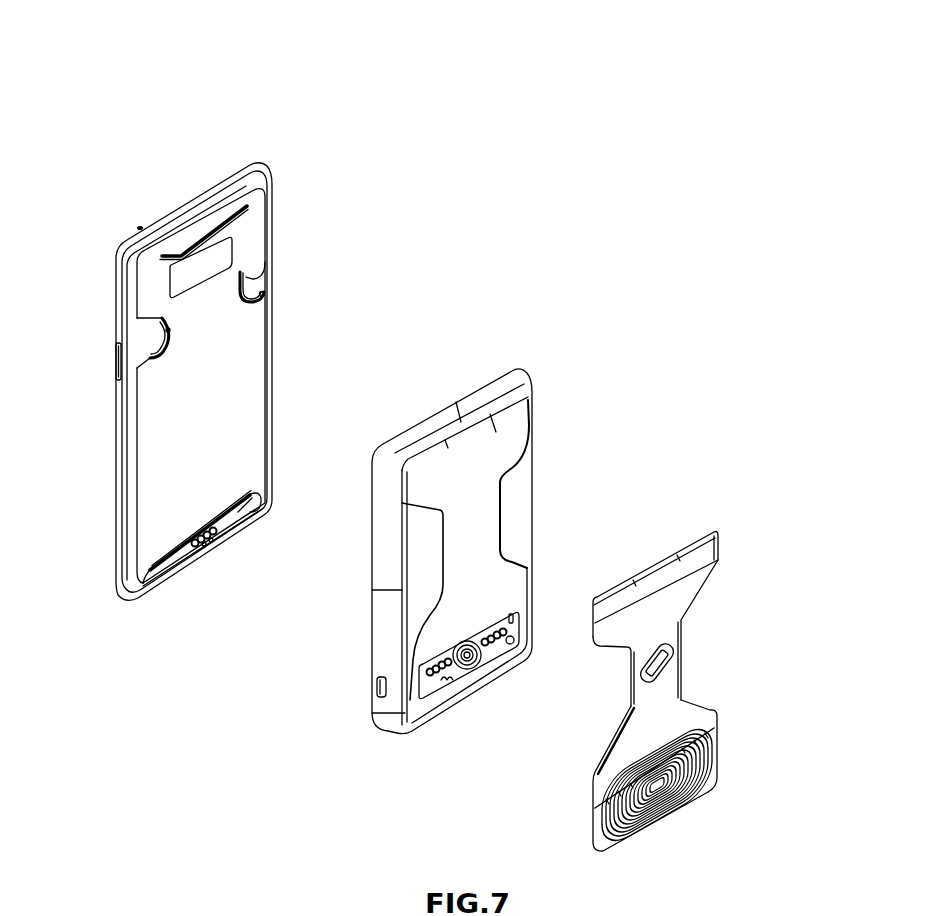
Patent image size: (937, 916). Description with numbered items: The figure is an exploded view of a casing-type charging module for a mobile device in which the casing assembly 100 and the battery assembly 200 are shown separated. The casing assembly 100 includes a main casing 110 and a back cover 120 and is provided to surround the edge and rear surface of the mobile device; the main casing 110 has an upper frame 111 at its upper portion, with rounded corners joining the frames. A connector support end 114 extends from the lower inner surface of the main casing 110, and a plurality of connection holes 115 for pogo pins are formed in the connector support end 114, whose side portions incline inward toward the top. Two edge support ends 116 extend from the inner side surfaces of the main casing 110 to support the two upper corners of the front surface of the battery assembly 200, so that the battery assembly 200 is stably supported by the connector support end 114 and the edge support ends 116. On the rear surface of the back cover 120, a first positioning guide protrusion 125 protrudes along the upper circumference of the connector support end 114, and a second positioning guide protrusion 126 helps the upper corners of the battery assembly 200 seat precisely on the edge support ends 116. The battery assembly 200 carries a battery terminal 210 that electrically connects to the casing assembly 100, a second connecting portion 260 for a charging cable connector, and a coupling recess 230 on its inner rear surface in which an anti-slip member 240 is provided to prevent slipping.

The casing assembly 100 is at (242, 98).
The main casing 110 is at (110, 195).
The upper frame 111 is at (188, 196).
The connector support end 114 is at (257, 512).
The connection holes 115 is at (198, 545).
The edge support ends 116 is at (252, 279).
The back cover 120 is at (295, 363).
The first positioning guide protrusion 125 is at (212, 513).
The second positioning guide protrusion 126 is at (265, 294).
The battery assembly 200 is at (532, 320).
The battery terminal 210 is at (437, 681).
The coupling recess 230 is at (487, 517).
The anti-slip member 240 is at (713, 722).
The second connecting portion 260 is at (377, 683).